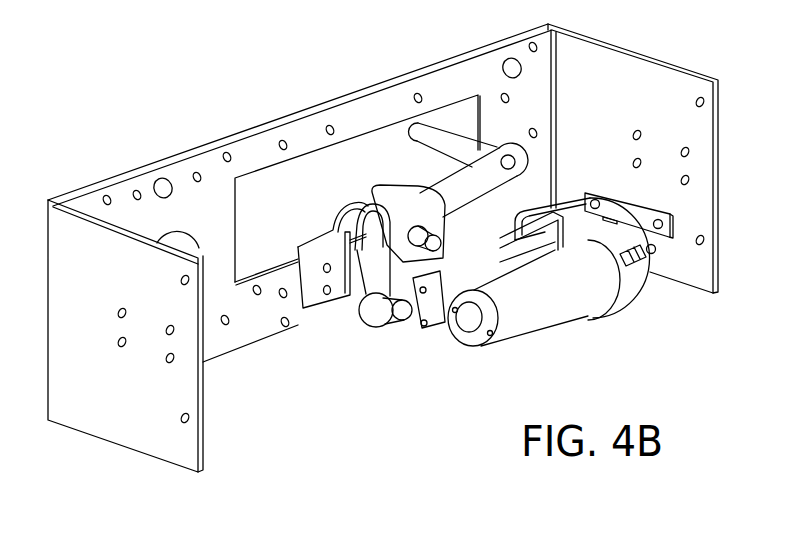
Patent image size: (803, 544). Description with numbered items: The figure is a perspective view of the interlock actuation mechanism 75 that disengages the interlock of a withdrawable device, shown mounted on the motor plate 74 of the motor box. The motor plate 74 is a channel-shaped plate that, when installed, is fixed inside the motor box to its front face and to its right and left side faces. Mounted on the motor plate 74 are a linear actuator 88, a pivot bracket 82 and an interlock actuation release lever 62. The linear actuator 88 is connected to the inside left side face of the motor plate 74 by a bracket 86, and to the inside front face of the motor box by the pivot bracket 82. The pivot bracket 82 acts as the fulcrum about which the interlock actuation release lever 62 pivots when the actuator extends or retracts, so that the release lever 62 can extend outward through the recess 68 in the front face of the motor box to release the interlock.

The recess 68 is at (262, 183).
The motor plate 74 is at (96, 432).
The pivot bracket 82 is at (313, 290).
The interlock actuation release lever 62 is at (457, 173).
The interlock actuation mechanism 75 is at (432, 322).
The linear actuator 88 is at (553, 317).
The bracket 86 is at (632, 198).